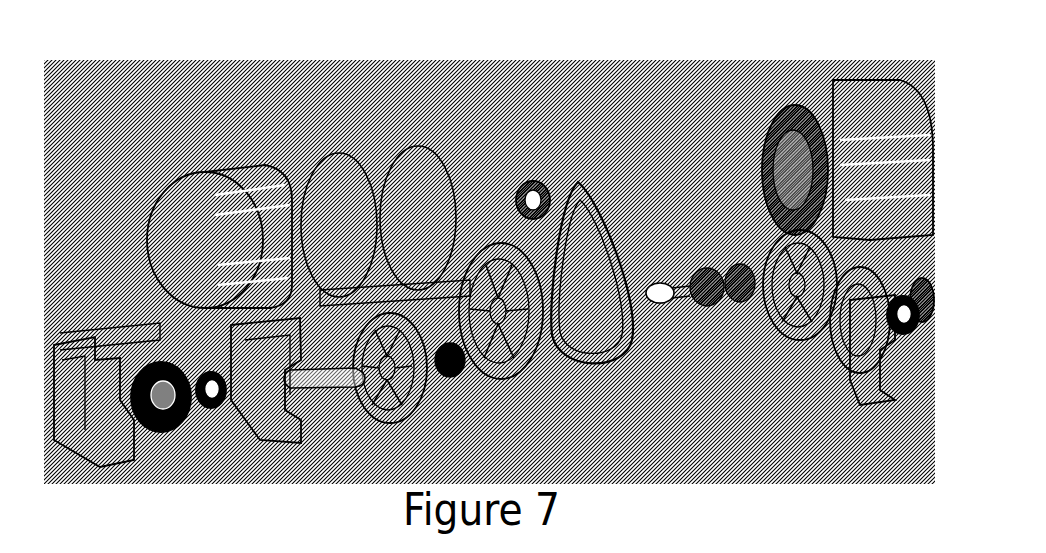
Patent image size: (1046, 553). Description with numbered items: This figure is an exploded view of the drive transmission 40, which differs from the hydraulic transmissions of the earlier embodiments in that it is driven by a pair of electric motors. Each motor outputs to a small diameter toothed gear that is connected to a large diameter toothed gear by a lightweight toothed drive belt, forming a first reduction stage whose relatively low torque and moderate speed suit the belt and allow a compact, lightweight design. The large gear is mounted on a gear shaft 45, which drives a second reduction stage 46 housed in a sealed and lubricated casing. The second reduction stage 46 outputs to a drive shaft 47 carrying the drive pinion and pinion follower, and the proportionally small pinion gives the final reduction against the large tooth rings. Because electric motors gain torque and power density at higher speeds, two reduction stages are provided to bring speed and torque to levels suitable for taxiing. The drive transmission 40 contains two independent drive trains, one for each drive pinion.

The drive transmission 40 is at (648, 118).
The gear shaft 45 is at (660, 305).
The second reduction stage 46 is at (425, 415).
The drive shaft 47 is at (312, 378).